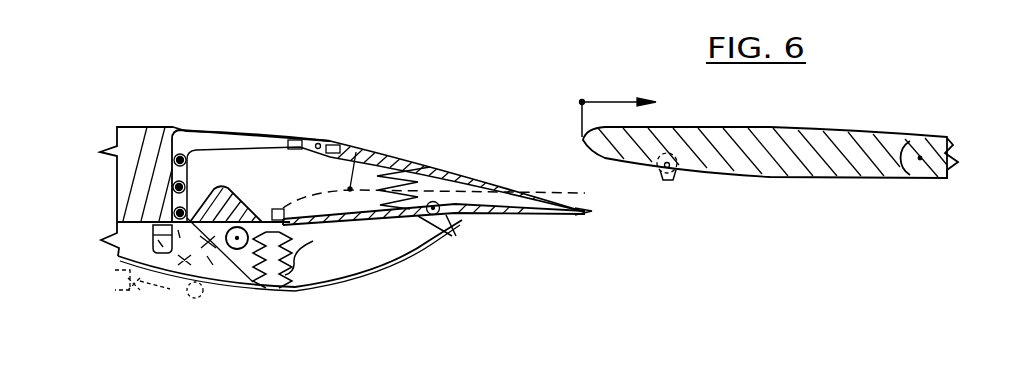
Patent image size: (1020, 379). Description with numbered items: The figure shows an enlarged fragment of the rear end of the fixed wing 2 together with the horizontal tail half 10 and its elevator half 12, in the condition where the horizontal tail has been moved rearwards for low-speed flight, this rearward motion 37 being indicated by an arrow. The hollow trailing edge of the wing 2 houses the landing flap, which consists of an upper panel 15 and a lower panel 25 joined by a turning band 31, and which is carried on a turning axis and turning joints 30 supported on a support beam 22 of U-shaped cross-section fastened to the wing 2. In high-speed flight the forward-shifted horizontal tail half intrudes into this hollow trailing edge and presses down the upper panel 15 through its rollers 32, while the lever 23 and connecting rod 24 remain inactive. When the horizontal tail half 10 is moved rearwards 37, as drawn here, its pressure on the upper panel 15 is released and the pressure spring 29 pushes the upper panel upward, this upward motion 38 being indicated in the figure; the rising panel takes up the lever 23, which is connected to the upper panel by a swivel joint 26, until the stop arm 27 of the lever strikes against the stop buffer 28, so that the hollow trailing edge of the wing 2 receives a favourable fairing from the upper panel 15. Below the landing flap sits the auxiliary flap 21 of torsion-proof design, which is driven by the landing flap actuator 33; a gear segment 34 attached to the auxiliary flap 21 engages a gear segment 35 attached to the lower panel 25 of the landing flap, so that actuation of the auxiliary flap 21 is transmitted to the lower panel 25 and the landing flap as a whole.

The fixed wing 2 is at (117, 190).
The horizontal tail half 10 is at (790, 168).
The elevator half 12 is at (933, 178).
The upper panel of landing flap 15 is at (474, 182).
The auxiliary flap 21 is at (223, 223).
The support beam 22 is at (390, 256).
The lever 23 is at (216, 153).
The connecting rod 24 is at (117, 150).
The lower panel of landing flap 25 is at (495, 212).
The swivel joint 26 is at (298, 143).
The stop arm 27 is at (318, 143).
The stop buffer 28 is at (334, 143).
The pressure spring 29 is at (430, 167).
The turning axis and turning joints of landing flap 30 is at (440, 218).
The turning band 31 is at (528, 213).
The rollers 32 is at (668, 180).
The landing flap actuator 33 is at (127, 291).
The gear segment 34 is at (253, 282).
The gear segment 35 is at (311, 241).
The rearward motion of horizontal tail 37 is at (609, 102).
The upward motion of upper panel 38 is at (350, 189).